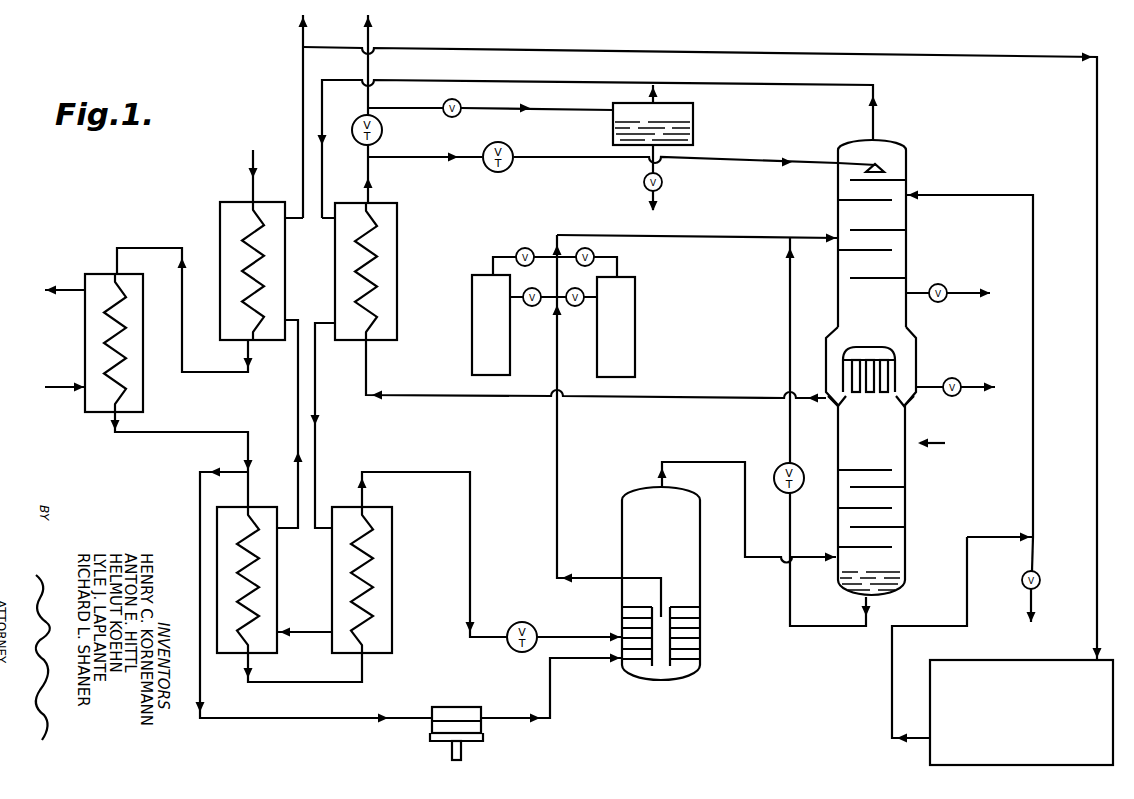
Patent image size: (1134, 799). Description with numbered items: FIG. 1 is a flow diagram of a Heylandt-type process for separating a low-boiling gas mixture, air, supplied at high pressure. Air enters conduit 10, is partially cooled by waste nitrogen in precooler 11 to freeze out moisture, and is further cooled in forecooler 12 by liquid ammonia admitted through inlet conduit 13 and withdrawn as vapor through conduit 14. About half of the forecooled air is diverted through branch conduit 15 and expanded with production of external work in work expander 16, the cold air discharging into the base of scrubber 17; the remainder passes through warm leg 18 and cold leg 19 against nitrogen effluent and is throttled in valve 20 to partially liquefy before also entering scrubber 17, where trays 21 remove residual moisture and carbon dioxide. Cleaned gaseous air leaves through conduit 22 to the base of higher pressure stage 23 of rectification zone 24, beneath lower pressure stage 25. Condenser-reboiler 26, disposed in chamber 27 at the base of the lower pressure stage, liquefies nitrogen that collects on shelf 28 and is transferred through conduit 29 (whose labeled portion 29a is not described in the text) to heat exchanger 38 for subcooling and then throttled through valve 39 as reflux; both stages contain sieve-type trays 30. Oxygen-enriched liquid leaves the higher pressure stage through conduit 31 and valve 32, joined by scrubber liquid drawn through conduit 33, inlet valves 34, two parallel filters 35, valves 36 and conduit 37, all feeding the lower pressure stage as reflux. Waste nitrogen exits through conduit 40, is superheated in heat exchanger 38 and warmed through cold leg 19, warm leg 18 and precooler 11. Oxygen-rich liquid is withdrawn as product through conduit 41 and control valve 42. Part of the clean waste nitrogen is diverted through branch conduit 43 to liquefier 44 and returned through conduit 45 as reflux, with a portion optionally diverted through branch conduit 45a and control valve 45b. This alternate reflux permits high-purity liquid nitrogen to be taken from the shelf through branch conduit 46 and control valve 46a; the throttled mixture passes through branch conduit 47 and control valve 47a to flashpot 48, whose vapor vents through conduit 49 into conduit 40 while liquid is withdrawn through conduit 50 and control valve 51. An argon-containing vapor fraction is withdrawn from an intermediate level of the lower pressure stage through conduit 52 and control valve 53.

The conduit 10 is at (250, 157).
The precooler 11 is at (220, 209).
The forecooler 12 is at (98, 273).
The inlet conduit 13 is at (53, 384).
The conduit 14 is at (72, 296).
The branch conduit 15 is at (200, 484).
The work expander 16 is at (447, 707).
The scrubber 17 is at (620, 591).
The warm leg 18 is at (265, 505).
The cold leg 19 is at (343, 505).
The valve 20 is at (516, 622).
The trays 21 is at (692, 646).
The conduit 22 is at (690, 460).
The higher pressure stage 23 is at (893, 543).
The rectification zone 24 is at (905, 367).
The lower pressure stage 25 is at (895, 217).
The condenser-reboiler 26 is at (896, 368).
The chamber 27 is at (832, 352).
The shelf 28 is at (912, 402).
The conduit 29 is at (743, 380).
The line to valve 29a is at (372, 172).
The sieve-type trays 30 is at (862, 279).
The conduit 31 is at (788, 300).
The valve 32 is at (776, 467).
The conduit 33 is at (580, 572).
The inlet valves 34 is at (532, 307).
The filters 35 is at (480, 335).
The valves 36 is at (578, 265).
The conduit 37 is at (704, 240).
The heat exchanger 38 is at (397, 258).
The valve 39 is at (494, 174).
The conduit 40 is at (303, 105).
The conduit 41 is at (932, 384).
The control valve 42 is at (962, 381).
The branch conduit 43 is at (457, 48).
The liquefier 44 is at (993, 672).
The conduit 45 is at (1035, 473).
The branch conduit 45a is at (1034, 562).
The control valve 45b is at (1039, 590).
The branch conduit 46 is at (374, 152).
The control valve 46a is at (356, 135).
The branch conduit 47 is at (423, 110).
The control valve 47a is at (461, 103).
The flashpot 48 is at (693, 110).
The conduit 49 is at (645, 96).
The conduit 50 is at (648, 155).
The control valve 51 is at (643, 187).
The conduit 52 is at (920, 290).
The control valve 53 is at (948, 288).